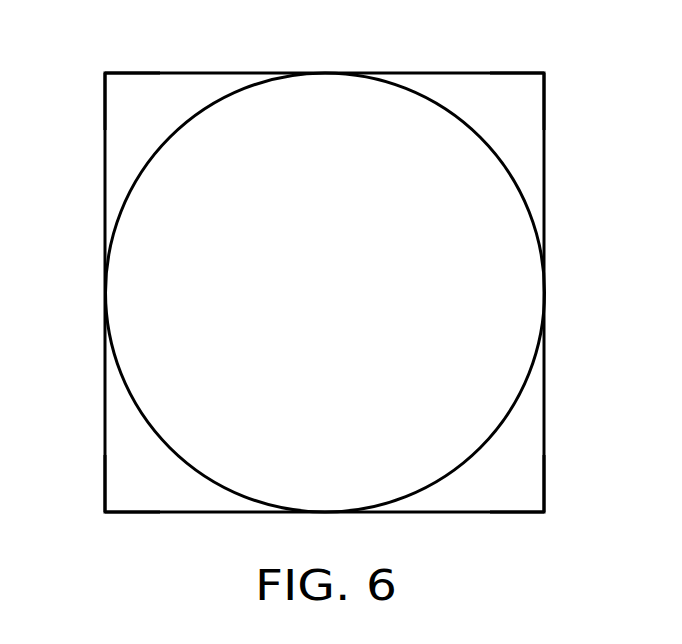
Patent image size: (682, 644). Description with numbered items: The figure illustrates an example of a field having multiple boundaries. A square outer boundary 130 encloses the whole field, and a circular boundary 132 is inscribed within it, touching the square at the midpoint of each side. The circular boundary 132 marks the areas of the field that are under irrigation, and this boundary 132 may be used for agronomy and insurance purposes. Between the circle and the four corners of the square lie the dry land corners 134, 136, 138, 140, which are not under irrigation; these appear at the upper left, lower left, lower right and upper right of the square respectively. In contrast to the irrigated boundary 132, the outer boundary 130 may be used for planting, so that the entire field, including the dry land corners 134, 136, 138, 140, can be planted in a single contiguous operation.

The boundary 130 is at (442, 72).
The boundary 132 is at (473, 132).
The dry land corner 134 is at (125, 115).
The dry land corner 136 is at (125, 475).
The dry land corner 138 is at (528, 465).
The dry land corner 140 is at (528, 115).